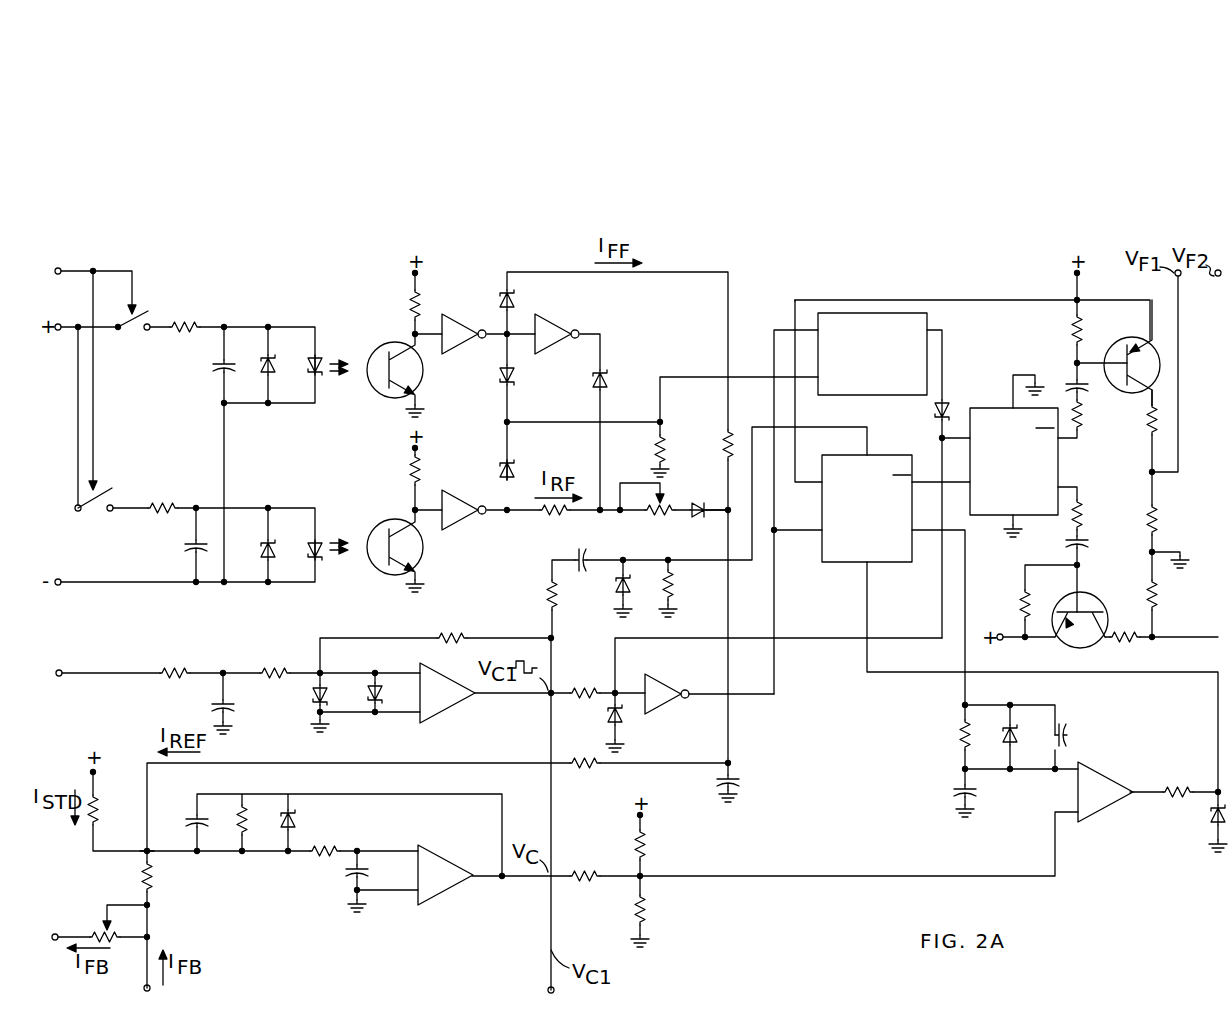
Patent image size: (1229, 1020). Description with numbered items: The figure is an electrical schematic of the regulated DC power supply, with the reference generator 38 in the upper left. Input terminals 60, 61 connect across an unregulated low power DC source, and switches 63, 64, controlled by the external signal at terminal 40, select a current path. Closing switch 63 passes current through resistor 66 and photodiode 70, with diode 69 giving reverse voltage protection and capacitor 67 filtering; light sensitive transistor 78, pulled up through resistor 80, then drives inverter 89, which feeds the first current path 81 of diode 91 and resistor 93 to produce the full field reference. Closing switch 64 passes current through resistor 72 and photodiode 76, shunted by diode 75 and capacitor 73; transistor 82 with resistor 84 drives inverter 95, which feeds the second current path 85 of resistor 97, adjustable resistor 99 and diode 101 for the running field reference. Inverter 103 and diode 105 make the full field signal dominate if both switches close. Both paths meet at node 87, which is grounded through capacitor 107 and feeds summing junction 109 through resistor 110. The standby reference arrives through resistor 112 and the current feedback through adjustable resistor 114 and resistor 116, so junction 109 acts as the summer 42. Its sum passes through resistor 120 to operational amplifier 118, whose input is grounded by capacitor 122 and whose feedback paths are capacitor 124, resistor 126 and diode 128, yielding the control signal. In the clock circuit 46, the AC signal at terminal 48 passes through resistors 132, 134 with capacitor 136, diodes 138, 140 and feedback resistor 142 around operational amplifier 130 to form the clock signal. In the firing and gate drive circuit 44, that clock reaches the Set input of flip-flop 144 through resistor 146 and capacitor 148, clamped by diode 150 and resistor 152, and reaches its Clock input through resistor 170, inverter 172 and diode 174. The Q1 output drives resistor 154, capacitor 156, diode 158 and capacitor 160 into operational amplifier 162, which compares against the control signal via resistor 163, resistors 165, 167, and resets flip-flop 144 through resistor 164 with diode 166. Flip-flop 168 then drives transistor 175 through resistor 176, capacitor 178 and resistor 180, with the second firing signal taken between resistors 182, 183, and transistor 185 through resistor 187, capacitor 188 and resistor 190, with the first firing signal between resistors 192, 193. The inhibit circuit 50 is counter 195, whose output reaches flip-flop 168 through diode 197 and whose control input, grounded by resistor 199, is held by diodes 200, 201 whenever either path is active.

The reference generator 38 is at (303, 292).
The terminal 40 is at (62, 270).
The summer 42 is at (284, 888).
The firing and gate drive circuit 44 is at (994, 560).
The clock circuit 46 is at (280, 631).
The terminal 48 is at (62, 673).
The inhibit circuit 50 is at (846, 287).
The input terminal 60 is at (58, 325).
The input terminal 61 is at (62, 578).
The switch 63 is at (145, 338).
The switch 64 is at (100, 518).
The resistor 66 is at (187, 326).
The capacitor 67 is at (210, 368).
The diode 69 is at (262, 363).
The photodiode 70 is at (306, 363).
The resistor 72 is at (149, 507).
The capacitor 73 is at (182, 559).
The diode 75 is at (252, 554).
The photodiode 76 is at (296, 554).
The light sensitive transistor 78 is at (386, 340).
The resistor 80 is at (403, 308).
The first current path 81 is at (502, 328).
The light sensitive transistor 82 is at (420, 542).
The resistor 84 is at (422, 476).
The second current path 85 is at (518, 518).
The node 87 is at (720, 502).
The inverter 89 is at (470, 316).
The diode 91 is at (516, 302).
The resistor 93 is at (722, 430).
The inverter 95 is at (454, 492).
The resistor 97 is at (560, 518).
The adjustable resistor 99 is at (656, 509).
The diode 101 is at (705, 525).
The inverter 103 is at (552, 322).
The diode 105 is at (612, 374).
The capacitor 107 is at (712, 784).
The summing junction 109 is at (142, 846).
The resistor 110 is at (598, 754).
The resistor 112 is at (96, 810).
The adjustable resistor 114 is at (104, 928).
The resistor 116 is at (151, 884).
The operational amplifier 118 is at (440, 858).
The resistor 120 is at (326, 842).
The capacitor 122 is at (348, 874).
The capacitor 124 is at (186, 822).
The resistor 126 is at (234, 824).
The diode 128 is at (296, 819).
The operational amplifier 130 is at (432, 671).
The resistor 132 is at (164, 670).
The resistor 134 is at (266, 670).
The capacitor 136 is at (234, 707).
The diode 138 is at (312, 694).
The diode 140 is at (368, 692).
The resistor 142 is at (450, 634).
The D-type flip-flop 144 is at (876, 452).
The resistor 146 is at (548, 590).
The capacitor 148 is at (584, 554).
The diode 150 is at (614, 588).
The resistor 152 is at (676, 586).
The resistor 154 is at (960, 736).
The capacitor 156 is at (952, 797).
The diode 158 is at (994, 738).
The capacitor 160 is at (1066, 738).
The operational amplifier 162 is at (1090, 764).
The resistor 163 is at (568, 870).
The resistor 164 is at (1178, 784).
The resistor 165 is at (646, 846).
The diode 166 is at (1208, 822).
The resistor 167 is at (648, 917).
The second D-type flip-flop 168 is at (1002, 406).
The resistor 170 is at (606, 688).
The inverter 172 is at (652, 688).
The diode 174 is at (624, 725).
The transistor 175 is at (1094, 600).
The resistor 176 is at (1080, 512).
The capacitor 178 is at (1066, 541).
The resistor 180 is at (1020, 602).
The resistor 182 is at (1122, 628).
The resistor 183 is at (1158, 596).
The transistor 185 is at (1142, 336).
The resistor 187 is at (1079, 416).
The capacitor 188 is at (1056, 388).
The resistor 190 is at (1072, 332).
The resistor 192 is at (1150, 422).
The resistor 193 is at (1146, 526).
The counter 195 is at (928, 324).
The diode 197 is at (942, 394).
The resistor 199 is at (656, 452).
The diode 200 is at (496, 378).
The diode 201 is at (498, 458).